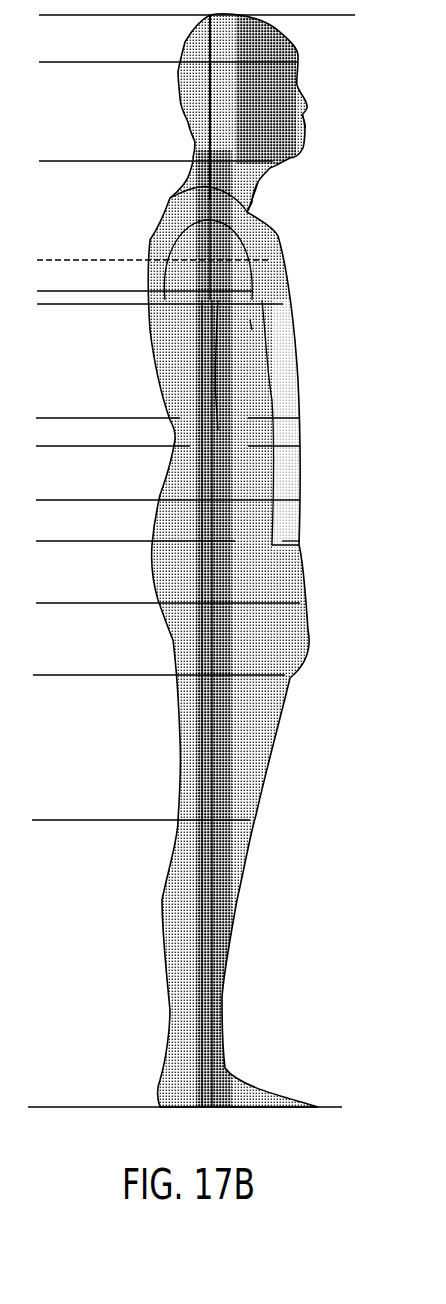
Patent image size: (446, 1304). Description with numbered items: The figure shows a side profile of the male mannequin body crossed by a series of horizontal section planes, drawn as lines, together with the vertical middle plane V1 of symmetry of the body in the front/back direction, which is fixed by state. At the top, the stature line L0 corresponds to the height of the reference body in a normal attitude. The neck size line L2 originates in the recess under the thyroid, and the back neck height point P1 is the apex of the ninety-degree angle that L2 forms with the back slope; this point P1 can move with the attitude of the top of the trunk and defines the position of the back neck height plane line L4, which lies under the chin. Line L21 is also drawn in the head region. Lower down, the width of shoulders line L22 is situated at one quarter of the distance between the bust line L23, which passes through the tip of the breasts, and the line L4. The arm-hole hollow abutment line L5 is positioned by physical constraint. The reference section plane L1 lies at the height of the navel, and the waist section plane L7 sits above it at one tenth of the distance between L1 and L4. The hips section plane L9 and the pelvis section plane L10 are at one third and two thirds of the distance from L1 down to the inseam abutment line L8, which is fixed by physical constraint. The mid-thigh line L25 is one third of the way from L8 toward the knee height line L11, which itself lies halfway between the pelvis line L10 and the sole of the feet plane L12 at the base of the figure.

The stature line L0 is at (90, 15).
The eye level reference line L21 is at (83, 70).
The back neck height point P1 is at (190, 160).
The vertical middle plane V1 is at (302, 122).
The back neck height plane line L4 is at (86, 161).
The neck size plane line L2 is at (258, 198).
The width of shoulders line L22 is at (88, 258).
The arm-hole hollow abutment line L5 is at (95, 290).
The bust line L23 is at (43, 305).
The waist section plane line L7 is at (128, 418).
The reference section plane line L1 is at (140, 448).
The hips section plane line L9 is at (110, 502).
The pelvis section plane line L10 is at (70, 541).
The inseam abutment section plane line L8 is at (130, 606).
The mid-thigh line L25 is at (138, 678).
The knee height section plane line L11 is at (133, 822).
The sole of the feet plane line L12 is at (133, 1109).